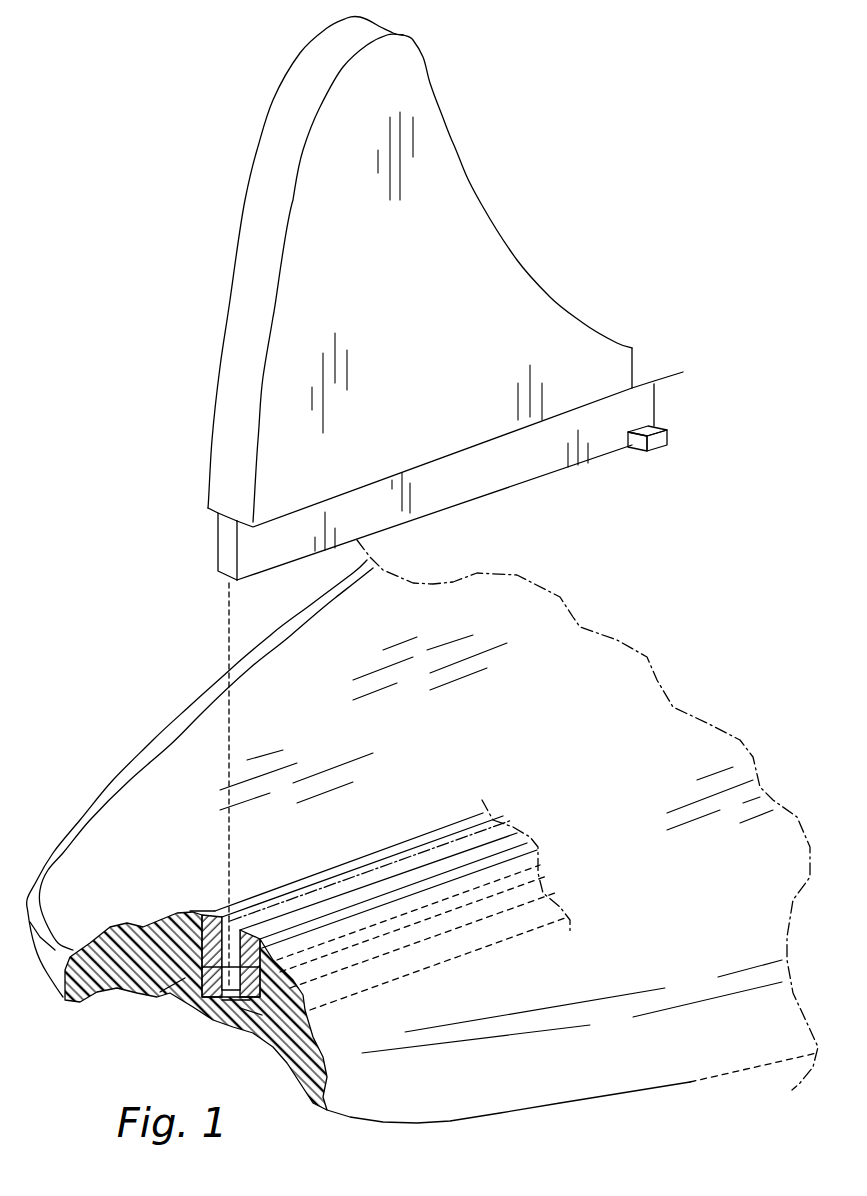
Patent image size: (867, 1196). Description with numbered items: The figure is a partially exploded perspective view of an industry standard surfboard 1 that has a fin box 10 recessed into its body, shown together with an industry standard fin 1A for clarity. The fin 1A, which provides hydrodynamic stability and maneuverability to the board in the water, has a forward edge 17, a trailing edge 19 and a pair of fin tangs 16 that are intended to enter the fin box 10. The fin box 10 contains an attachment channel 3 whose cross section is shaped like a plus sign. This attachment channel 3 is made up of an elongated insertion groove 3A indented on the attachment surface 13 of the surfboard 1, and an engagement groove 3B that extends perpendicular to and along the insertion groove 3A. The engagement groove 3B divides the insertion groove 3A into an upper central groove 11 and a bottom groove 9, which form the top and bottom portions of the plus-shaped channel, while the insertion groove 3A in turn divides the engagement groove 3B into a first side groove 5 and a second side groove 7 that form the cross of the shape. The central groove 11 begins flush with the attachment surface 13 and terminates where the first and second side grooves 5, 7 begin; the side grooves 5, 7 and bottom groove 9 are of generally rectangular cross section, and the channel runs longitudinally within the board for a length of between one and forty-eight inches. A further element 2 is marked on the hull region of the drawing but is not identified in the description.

The surfboard 1 is at (699, 1060).
The fin 1A is at (445, 511).
The hull body 2 is at (581, 828).
The attachment channel 3 is at (158, 994).
The insertion groove 3A is at (304, 898).
The engagement groove 3B is at (315, 1027).
The first side groove 5 is at (187, 1003).
The second side groove 7 is at (254, 1033).
The bottom groove 9 is at (237, 1023).
The fin box 10 is at (170, 1013).
The central groove 11 is at (229, 925).
The attachment surface 13 is at (222, 910).
The fin tangs 16 is at (667, 437).
The forward edge 17 is at (578, 313).
The trailing edge 19 is at (228, 408).